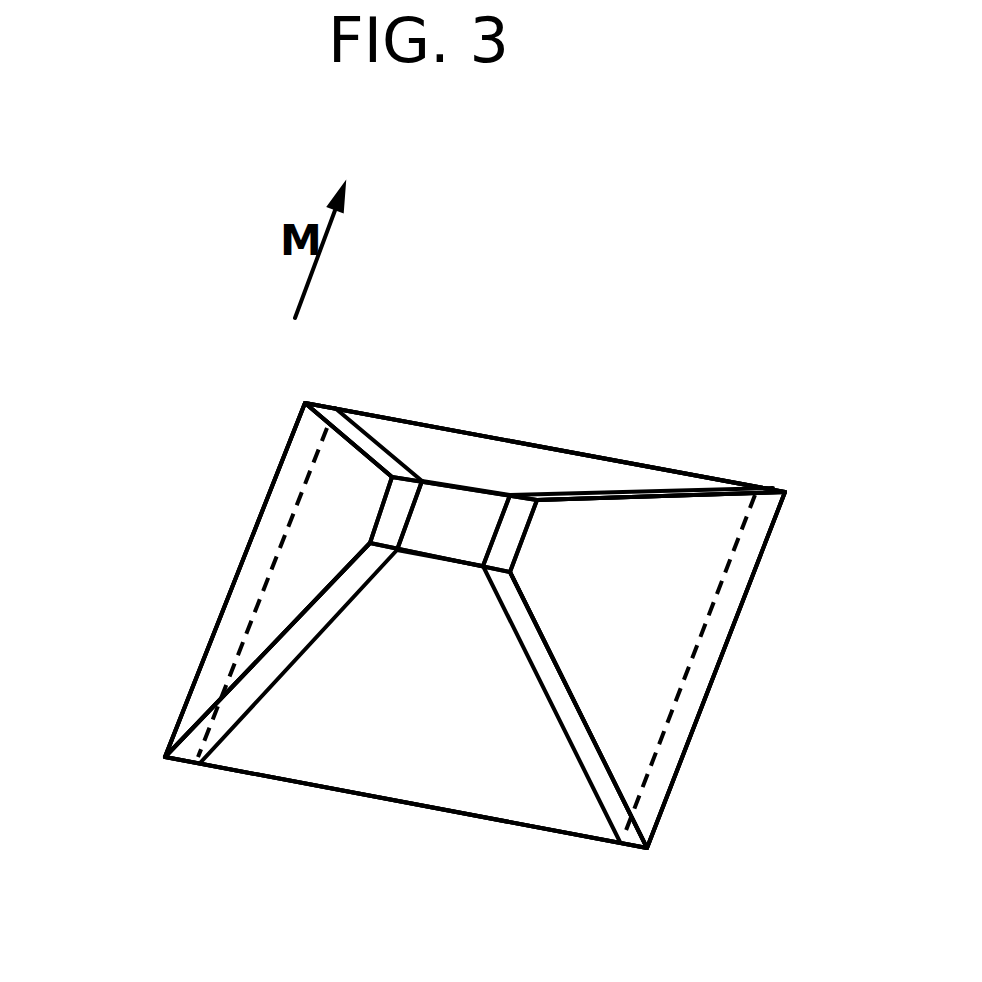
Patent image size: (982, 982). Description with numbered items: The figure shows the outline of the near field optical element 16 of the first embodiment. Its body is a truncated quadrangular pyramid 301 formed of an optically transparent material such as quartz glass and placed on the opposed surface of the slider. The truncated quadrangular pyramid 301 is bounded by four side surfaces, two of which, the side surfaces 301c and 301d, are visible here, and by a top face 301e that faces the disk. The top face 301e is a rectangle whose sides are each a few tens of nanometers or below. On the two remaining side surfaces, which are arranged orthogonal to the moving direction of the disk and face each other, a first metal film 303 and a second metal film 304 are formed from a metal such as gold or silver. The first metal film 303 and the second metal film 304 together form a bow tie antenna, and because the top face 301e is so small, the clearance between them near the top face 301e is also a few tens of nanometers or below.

The near field optical element 16 is at (155, 272).
The truncated quadrangular pyramid 301 is at (413, 698).
The side surface 301c is at (557, 472).
The side surface 301d is at (508, 755).
The top face 301e is at (456, 518).
The first metal film 303 is at (310, 522).
The second metal film 304 is at (645, 630).